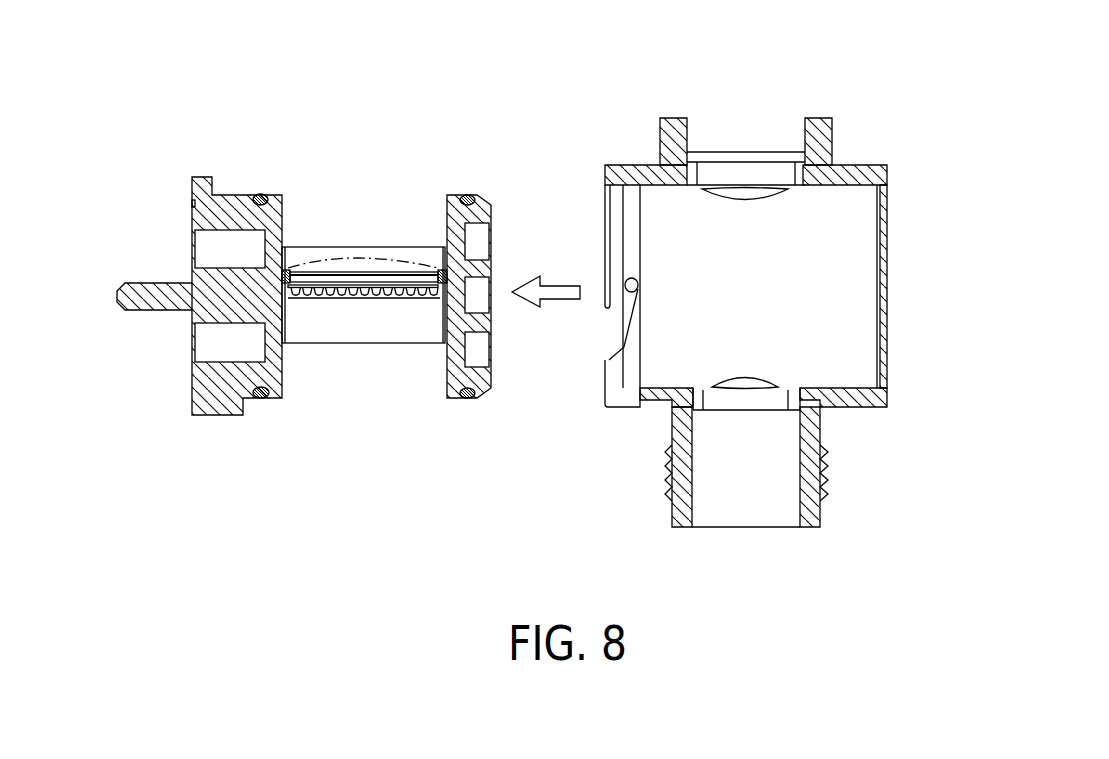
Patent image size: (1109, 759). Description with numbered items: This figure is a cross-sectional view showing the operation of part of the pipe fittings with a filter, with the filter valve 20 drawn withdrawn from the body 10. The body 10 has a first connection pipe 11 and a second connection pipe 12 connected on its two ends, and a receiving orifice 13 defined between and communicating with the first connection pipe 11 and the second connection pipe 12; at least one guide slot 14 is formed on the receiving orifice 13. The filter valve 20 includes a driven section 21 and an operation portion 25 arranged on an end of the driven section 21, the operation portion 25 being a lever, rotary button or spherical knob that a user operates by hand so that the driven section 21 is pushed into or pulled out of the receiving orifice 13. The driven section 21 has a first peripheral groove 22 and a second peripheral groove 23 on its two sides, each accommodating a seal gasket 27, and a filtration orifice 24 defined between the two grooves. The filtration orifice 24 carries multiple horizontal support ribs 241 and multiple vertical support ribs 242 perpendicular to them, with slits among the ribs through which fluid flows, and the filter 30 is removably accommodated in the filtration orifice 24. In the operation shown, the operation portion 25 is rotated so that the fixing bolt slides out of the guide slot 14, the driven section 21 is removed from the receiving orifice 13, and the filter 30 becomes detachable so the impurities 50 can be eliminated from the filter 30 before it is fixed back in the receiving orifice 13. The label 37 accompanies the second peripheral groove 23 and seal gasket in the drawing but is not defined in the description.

The body 10 is at (731, 325).
The first connection pipe 11 is at (713, 130).
The second connection pipe 12 is at (772, 510).
The receiving orifice 13 is at (648, 217).
The guide slot 14 is at (626, 291).
The filter valve 20 is at (168, 214).
The driven section 21 is at (452, 392).
The first peripheral groove 22 is at (270, 356).
The seal gasket 27 is at (262, 398).
The second peripheral groove 23 is at (511, 358).
The sealing ring groove 37 is at (468, 394).
The filtration orifice 24 is at (365, 255).
The operation portion 25 is at (150, 297).
The filter 30 is at (385, 278).
The impurities 50 is at (343, 260).
The horizontal support ribs 241 is at (400, 297).
The vertical support ribs 242 is at (315, 297).